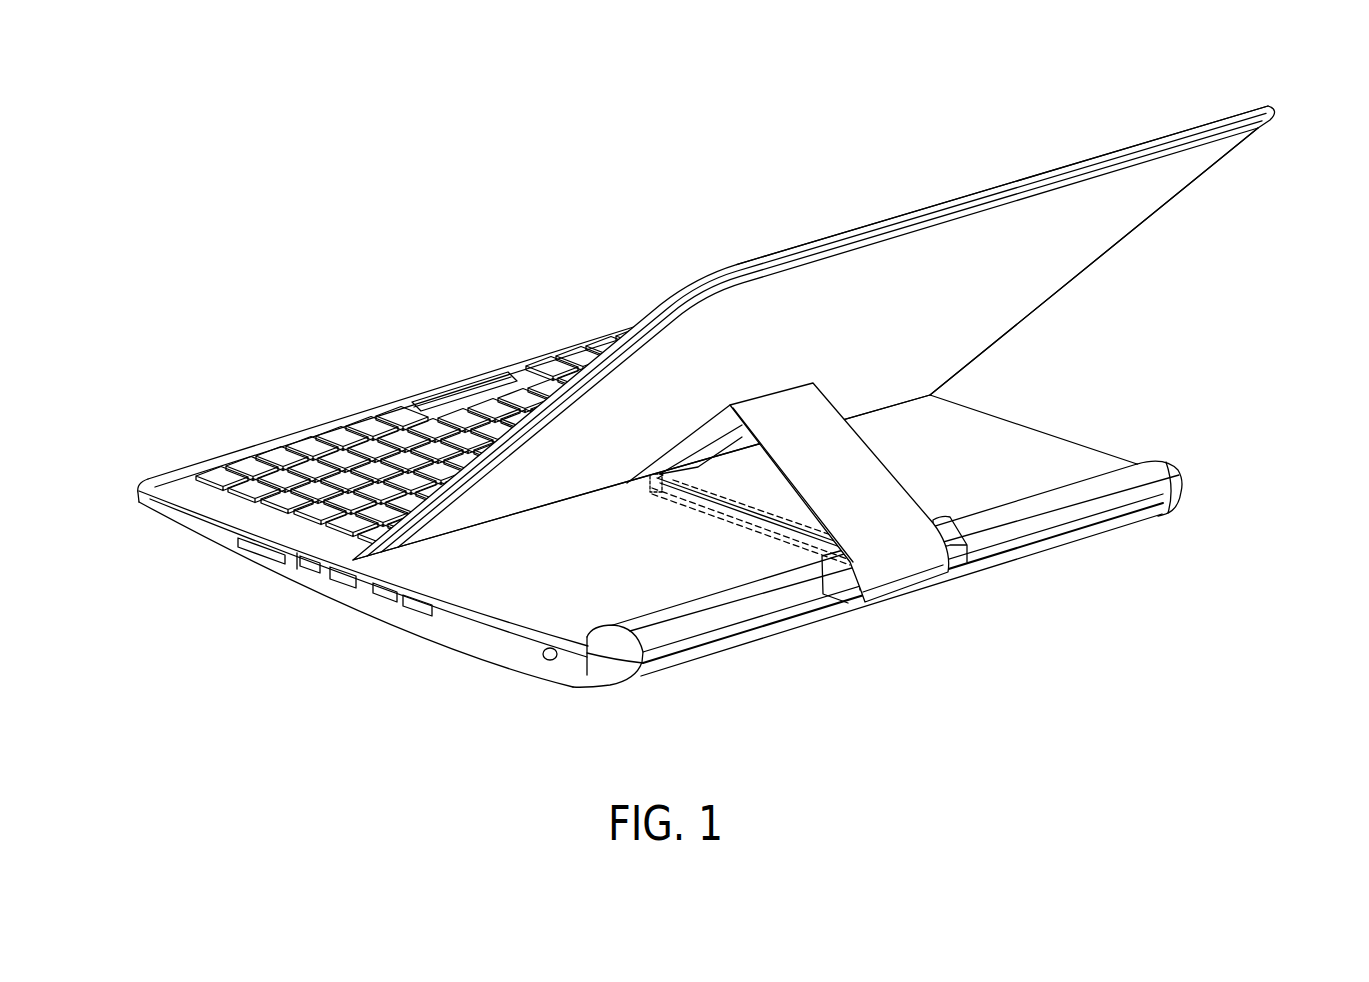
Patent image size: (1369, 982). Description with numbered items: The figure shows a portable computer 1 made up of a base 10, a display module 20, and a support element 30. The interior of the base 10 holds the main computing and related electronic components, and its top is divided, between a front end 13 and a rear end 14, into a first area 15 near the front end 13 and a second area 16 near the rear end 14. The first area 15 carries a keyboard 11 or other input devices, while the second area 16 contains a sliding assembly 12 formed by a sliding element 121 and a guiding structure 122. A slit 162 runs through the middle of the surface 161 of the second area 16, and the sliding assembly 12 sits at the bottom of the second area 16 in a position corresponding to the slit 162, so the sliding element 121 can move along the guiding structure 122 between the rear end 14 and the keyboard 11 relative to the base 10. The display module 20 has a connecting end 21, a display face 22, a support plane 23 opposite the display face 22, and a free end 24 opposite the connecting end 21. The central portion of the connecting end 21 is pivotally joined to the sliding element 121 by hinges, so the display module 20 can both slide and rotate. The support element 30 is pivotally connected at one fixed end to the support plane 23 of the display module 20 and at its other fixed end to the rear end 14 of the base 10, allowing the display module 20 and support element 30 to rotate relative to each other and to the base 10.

The portable computer 1 is at (300, 150).
The base 10 is at (622, 513).
The keyboard 11 is at (318, 468).
The sliding assembly 12 is at (713, 529).
The sliding element 121 is at (640, 488).
The guiding structure 122 is at (697, 503).
The front end 13 is at (505, 370).
The rear end 14 is at (757, 638).
The first area 15 is at (318, 585).
The second area 16 is at (587, 690).
The surface 161 is at (1003, 450).
The slit 162 is at (751, 525).
The display module 20 is at (850, 320).
The connecting end 21 is at (483, 532).
The display face 22 is at (633, 328).
The support plane 23 is at (1093, 238).
The free end 24 is at (1097, 152).
The support element 30 is at (896, 560).